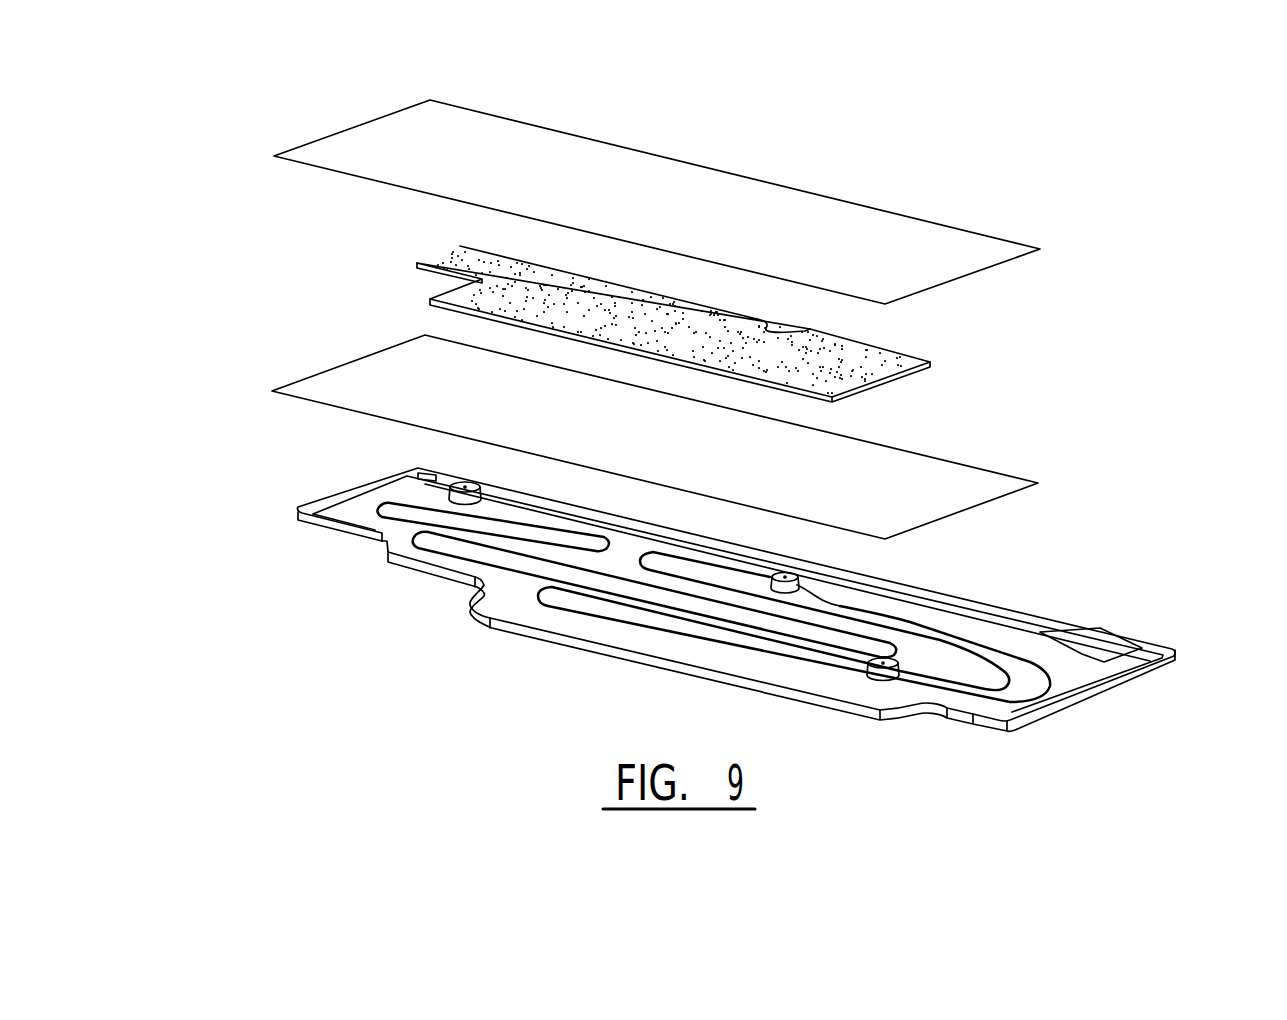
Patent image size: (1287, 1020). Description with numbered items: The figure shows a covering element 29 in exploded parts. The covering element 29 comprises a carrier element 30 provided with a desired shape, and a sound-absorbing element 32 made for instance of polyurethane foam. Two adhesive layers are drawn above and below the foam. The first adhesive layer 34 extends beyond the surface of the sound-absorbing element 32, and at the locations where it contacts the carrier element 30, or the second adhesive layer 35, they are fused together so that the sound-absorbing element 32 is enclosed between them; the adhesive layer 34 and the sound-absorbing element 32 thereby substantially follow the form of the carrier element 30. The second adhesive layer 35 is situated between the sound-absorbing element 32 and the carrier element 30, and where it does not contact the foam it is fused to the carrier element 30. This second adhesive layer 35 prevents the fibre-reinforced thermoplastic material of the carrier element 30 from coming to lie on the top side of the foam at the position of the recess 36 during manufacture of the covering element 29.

The covering element 29 is at (1127, 348).
The carrier element 30 is at (328, 517).
The sound-absorbing element 32 is at (455, 262).
The first adhesive layer 34 is at (317, 150).
The second adhesive layer 35 is at (322, 391).
The recess 36 is at (780, 325).